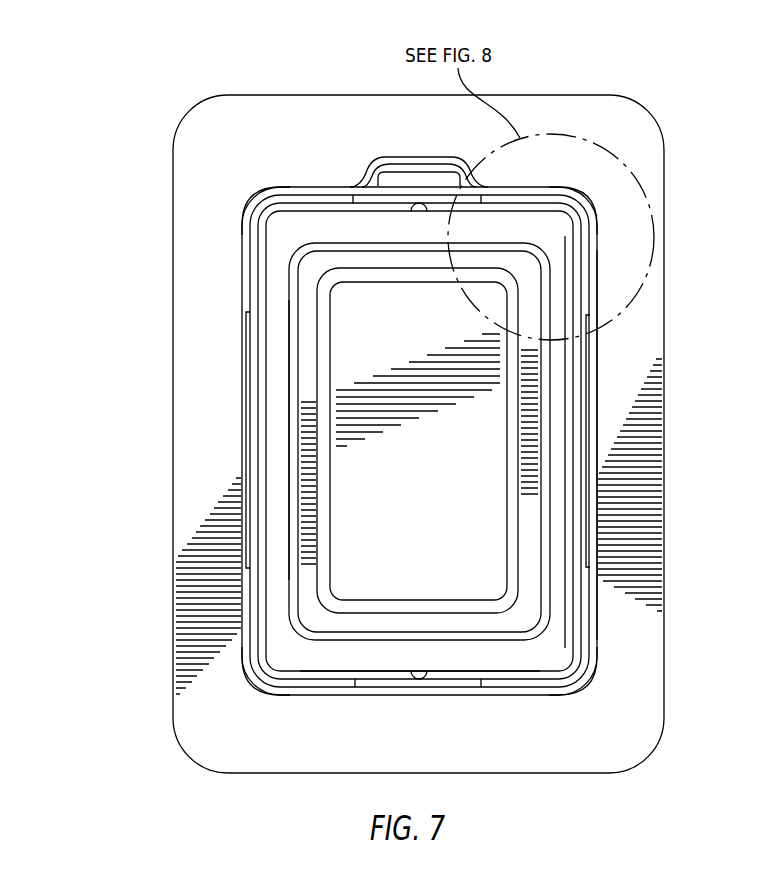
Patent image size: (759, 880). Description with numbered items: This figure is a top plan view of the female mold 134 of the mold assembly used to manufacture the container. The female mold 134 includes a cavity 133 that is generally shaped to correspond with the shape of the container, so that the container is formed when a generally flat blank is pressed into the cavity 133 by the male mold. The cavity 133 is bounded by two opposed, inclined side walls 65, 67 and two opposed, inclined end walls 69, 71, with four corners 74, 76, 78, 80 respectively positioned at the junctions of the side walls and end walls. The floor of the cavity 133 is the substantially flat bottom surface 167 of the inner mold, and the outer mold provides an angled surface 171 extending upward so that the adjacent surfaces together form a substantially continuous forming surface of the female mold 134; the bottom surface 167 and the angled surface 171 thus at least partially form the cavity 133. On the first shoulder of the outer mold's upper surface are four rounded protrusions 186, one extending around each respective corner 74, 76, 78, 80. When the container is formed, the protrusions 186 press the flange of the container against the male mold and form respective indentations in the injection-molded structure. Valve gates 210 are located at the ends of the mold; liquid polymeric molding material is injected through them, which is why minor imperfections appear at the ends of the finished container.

The inclined side wall 65 is at (288, 425).
The inclined side wall 67 is at (559, 470).
The inclined end wall 69 is at (342, 230).
The inclined end wall 71 is at (387, 654).
The corner 74 is at (270, 195).
The corner 76 is at (578, 190).
The corner 78 is at (578, 665).
The corner 80 is at (276, 668).
The cavity 133 is at (438, 489).
The female mold 134 is at (598, 395).
The bottom surface 167 is at (365, 508).
The angled surface 171 is at (310, 362).
The protrusion 186 is at (250, 249).
The valve gate 210 is at (418, 204).